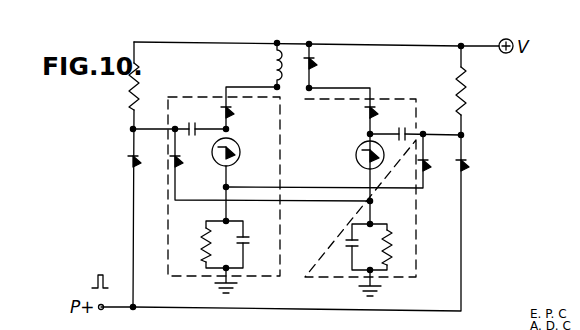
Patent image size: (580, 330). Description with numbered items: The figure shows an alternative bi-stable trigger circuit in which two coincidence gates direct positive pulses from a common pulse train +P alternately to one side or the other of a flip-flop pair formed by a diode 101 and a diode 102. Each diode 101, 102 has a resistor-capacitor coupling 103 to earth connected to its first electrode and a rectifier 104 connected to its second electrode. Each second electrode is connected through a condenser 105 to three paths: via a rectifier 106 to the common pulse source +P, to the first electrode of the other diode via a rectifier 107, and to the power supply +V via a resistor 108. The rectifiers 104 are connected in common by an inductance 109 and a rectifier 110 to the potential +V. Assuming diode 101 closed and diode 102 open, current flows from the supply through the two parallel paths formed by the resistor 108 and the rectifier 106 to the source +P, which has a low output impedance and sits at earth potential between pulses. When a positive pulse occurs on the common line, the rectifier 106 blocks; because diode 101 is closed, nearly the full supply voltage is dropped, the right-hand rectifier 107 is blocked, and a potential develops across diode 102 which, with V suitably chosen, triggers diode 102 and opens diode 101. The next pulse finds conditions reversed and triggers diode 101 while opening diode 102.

The diode 101 is at (242, 152).
The diode 102 is at (353, 155).
The resistor-capacitor coupling 103 is at (351, 258).
The rectifier 104 is at (368, 111).
The condenser 105 is at (394, 126).
The rectifier 106 is at (467, 165).
The rectifier 107 is at (429, 165).
The resistor 108 is at (478, 91).
The inductance 109 is at (256, 65).
The rectifier 110 is at (327, 66).